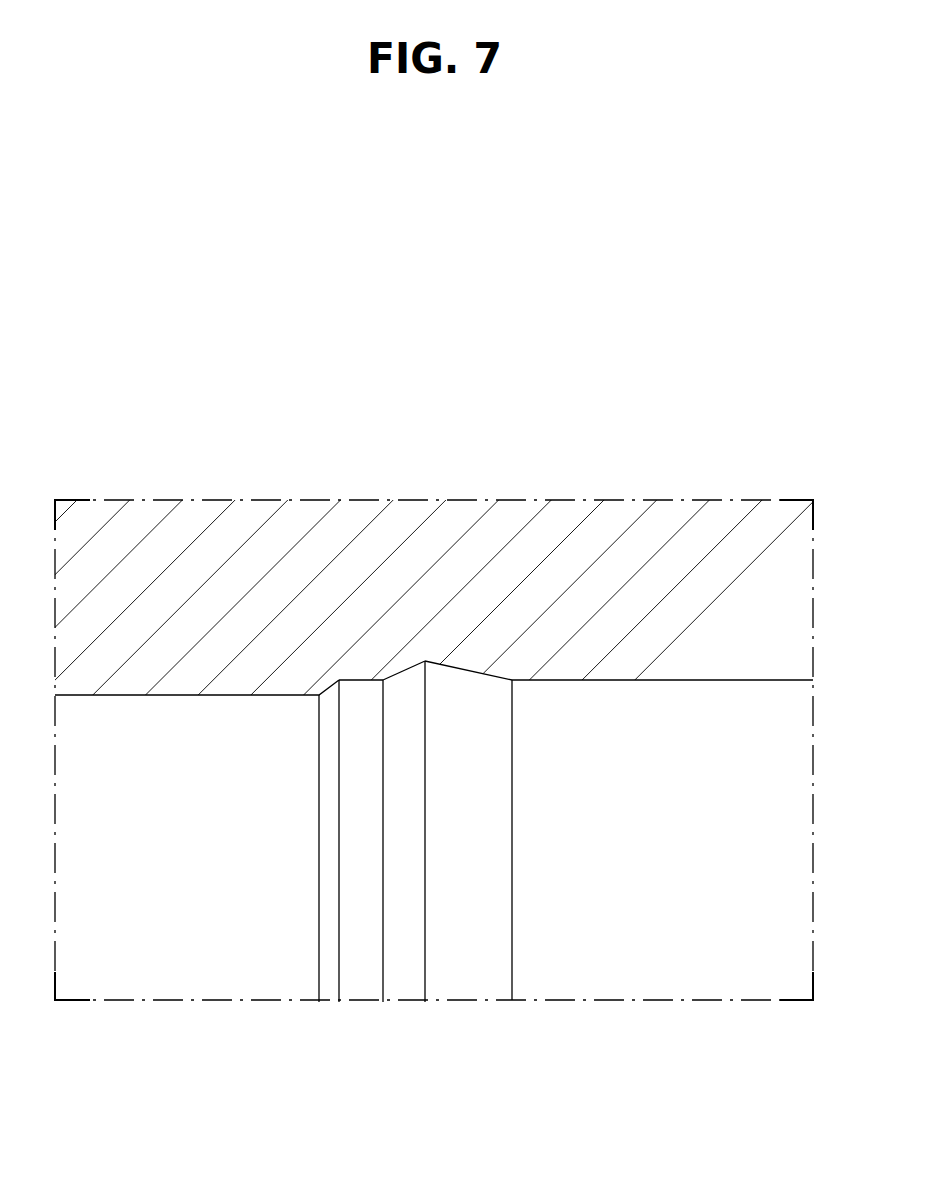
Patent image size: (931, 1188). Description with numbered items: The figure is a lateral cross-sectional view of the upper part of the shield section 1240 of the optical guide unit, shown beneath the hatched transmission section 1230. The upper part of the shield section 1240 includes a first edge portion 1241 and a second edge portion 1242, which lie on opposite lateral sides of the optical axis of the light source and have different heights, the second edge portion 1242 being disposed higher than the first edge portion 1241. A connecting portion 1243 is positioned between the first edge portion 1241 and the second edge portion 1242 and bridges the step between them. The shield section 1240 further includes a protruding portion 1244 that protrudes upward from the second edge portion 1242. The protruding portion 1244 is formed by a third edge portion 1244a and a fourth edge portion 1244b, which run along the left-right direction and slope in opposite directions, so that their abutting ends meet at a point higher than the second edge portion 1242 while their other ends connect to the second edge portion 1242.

The transmission section 1230 is at (658, 573).
The shield section 1240 is at (532, 353).
The first edge portion 1241 is at (237, 693).
The connecting portion 1243 is at (329, 683).
The protruding portion 1244 is at (480, 410).
The third edge portion 1244a is at (400, 665).
The fourth edge portion 1244b is at (462, 665).
The second edge portion 1242 is at (565, 680).